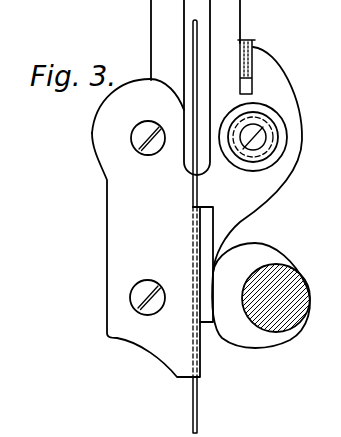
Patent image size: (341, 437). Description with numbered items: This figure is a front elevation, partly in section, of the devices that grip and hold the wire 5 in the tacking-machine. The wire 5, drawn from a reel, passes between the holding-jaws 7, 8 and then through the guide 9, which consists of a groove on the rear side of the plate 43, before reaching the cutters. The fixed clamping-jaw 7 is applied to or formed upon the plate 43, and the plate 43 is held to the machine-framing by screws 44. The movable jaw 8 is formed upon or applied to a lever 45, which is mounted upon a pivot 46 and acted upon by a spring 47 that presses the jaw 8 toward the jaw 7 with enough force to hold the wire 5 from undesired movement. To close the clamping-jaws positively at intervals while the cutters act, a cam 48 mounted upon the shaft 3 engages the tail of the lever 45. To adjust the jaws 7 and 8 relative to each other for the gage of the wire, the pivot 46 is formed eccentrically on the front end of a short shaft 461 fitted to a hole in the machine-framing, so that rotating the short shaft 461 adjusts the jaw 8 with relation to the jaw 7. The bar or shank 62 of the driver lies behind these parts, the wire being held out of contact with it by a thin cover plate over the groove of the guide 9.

The shaft 3 is at (316, 292).
The wire 5 is at (192, 47).
The clamping-jaw 7 is at (191, 192).
The jaw 8 is at (199, 192).
The guide 9 is at (191, 236).
The plate 43 is at (146, 228).
The screws 44 is at (131, 125).
The lever 45 is at (240, 208).
The pivot 46 is at (262, 135).
The spring 47 is at (258, 49).
The cam 48 is at (257, 344).
The bar or shank of the driver 62 is at (206, 31).
The short shaft 461 is at (240, 116).